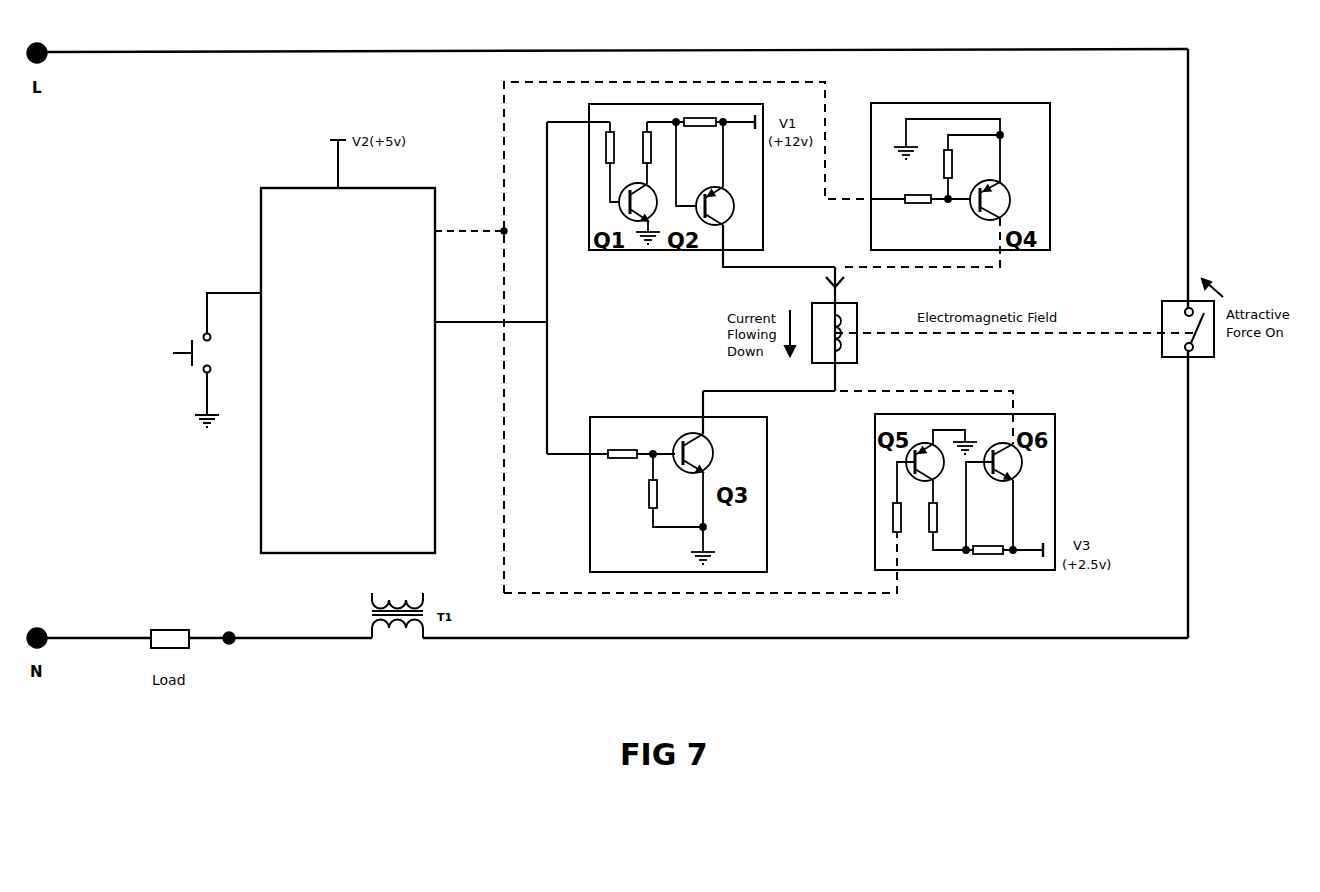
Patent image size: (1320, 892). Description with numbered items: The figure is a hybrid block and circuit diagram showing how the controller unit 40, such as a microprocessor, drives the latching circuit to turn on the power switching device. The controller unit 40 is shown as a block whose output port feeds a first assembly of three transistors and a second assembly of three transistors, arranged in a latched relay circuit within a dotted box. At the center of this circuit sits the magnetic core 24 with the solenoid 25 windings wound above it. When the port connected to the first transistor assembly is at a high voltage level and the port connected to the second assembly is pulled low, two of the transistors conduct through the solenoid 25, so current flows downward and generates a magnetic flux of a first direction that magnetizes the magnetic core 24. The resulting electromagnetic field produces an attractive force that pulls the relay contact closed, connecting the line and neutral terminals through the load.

The controller unit 40 is at (348, 370).
The magnetic core 24 is at (852, 315).
The solenoid 25 is at (798, 383).